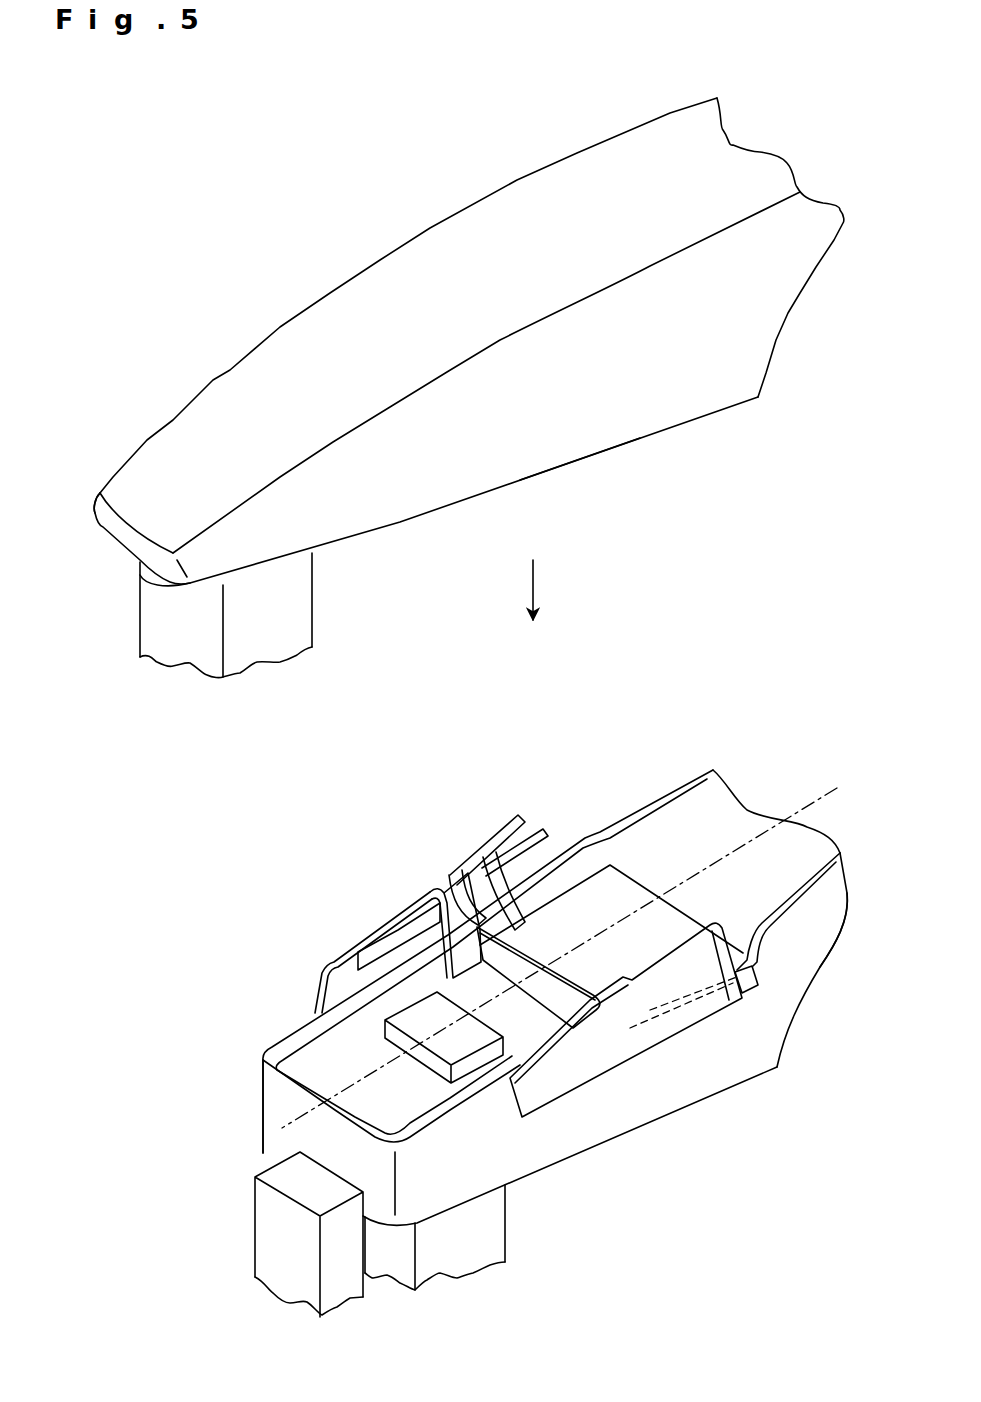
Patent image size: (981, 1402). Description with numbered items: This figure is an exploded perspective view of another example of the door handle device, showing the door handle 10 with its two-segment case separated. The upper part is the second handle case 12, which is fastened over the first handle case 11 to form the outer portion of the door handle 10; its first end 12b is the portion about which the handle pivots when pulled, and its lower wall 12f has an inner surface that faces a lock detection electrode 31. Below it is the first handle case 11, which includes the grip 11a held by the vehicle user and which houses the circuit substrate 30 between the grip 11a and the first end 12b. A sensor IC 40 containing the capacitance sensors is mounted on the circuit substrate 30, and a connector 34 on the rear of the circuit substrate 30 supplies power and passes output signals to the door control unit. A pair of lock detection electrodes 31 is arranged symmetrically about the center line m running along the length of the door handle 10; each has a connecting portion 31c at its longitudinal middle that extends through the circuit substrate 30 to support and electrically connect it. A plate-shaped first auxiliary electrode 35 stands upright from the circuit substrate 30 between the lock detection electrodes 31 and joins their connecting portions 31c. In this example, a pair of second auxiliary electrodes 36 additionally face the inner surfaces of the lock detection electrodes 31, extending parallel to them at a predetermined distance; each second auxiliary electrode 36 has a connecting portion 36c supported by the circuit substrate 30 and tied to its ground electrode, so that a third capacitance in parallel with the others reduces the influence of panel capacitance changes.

The door handle 10 is at (148, 833).
The first handle case 11 is at (693, 1103).
The grip 11a is at (837, 957).
The second handle case 12 is at (517, 181).
The first end 12b is at (180, 385).
The lower wall 12f is at (582, 433).
The circuit substrate 30 is at (638, 877).
The lock detection electrode 31 is at (323, 973).
The connecting portion 31c is at (437, 884).
The connector 34 is at (507, 1227).
The first auxiliary electrode 35 is at (530, 953).
The second auxiliary electrode 36 is at (552, 832).
The connecting portion 36c is at (493, 860).
The sensor IC 40 is at (383, 1037).
The center line m is at (575, 948).